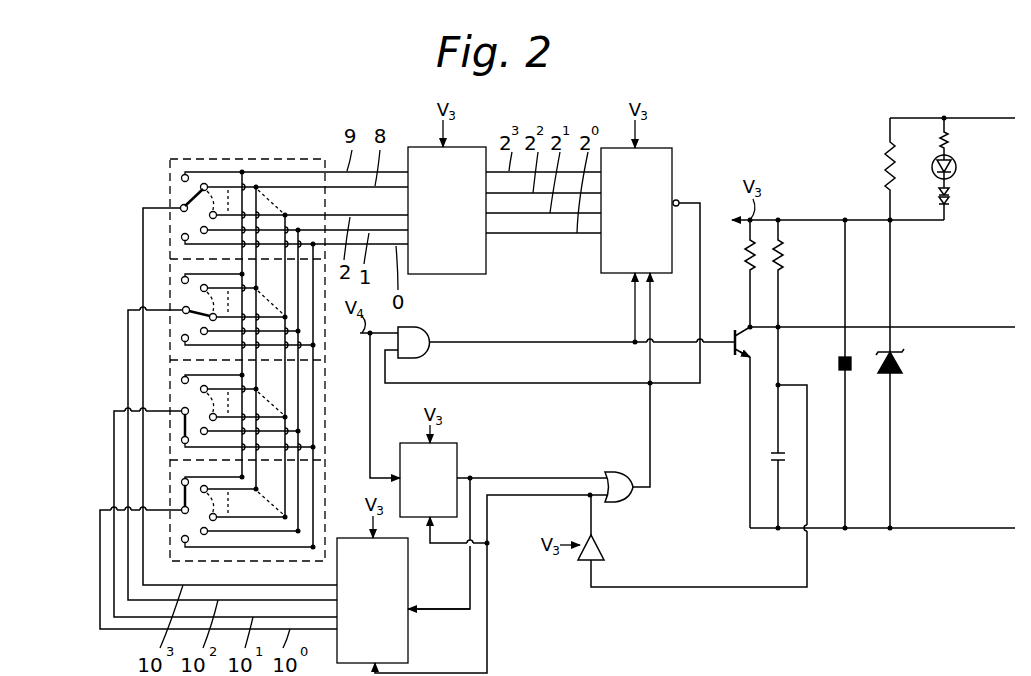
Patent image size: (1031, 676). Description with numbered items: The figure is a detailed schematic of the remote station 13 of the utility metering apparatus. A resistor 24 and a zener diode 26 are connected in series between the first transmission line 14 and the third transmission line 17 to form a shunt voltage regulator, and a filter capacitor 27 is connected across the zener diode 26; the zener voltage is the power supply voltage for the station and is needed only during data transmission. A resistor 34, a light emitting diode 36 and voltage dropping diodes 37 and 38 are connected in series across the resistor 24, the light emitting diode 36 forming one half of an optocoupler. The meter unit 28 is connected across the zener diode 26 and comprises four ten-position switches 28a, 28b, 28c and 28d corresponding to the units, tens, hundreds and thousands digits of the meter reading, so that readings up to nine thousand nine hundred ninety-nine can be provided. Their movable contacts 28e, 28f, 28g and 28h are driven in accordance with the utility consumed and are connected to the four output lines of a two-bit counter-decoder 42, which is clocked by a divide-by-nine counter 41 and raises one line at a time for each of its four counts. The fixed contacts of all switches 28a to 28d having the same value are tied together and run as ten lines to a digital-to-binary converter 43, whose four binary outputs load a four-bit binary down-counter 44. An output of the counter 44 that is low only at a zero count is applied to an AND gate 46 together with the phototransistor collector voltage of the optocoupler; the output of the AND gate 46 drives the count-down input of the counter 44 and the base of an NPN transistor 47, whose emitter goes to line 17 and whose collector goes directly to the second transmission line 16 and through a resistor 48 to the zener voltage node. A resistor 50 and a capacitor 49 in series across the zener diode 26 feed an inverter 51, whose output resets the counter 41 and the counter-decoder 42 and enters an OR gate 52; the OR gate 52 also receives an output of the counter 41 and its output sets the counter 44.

The remote station 13 is at (336, 130).
The first transmission line 14 is at (985, 118).
The second transmission line 16 is at (965, 327).
The third transmission line 17 is at (965, 528).
The resistor 24 is at (885, 160).
The zener diode 26 is at (905, 370).
The filter capacitor 27 is at (838, 362).
The meter unit 28 is at (212, 158).
The ten-position switch 28a is at (182, 521).
The ten-position switch 28b is at (182, 400).
The ten-position switch 28c is at (182, 297).
The ten-position switch 28d is at (182, 218).
The movable contact 28e is at (185, 498).
The movable contact 28f is at (183, 421).
The movable contact 28g is at (196, 314).
The movable contact 28h is at (188, 197).
The resistor 34 is at (950, 139).
The light emitting diode 36 is at (957, 174).
The voltage dropping diode 37 is at (955, 193).
The voltage dropping diode 38 is at (955, 205).
The divide-by-nine counter 41 is at (458, 446).
The two-bit counter-decoder 42 is at (408, 560).
The digital-to-binary converter 43 is at (471, 147).
The four-bit binary down-counter 44 is at (670, 148).
The AND gate 46 is at (432, 331).
The NPN transistor 47 is at (733, 330).
The resistor 48 is at (745, 257).
The capacitor 49 is at (772, 456).
The resistor 50 is at (783, 257).
The inverter 51 is at (606, 558).
The OR gate 52 is at (618, 471).